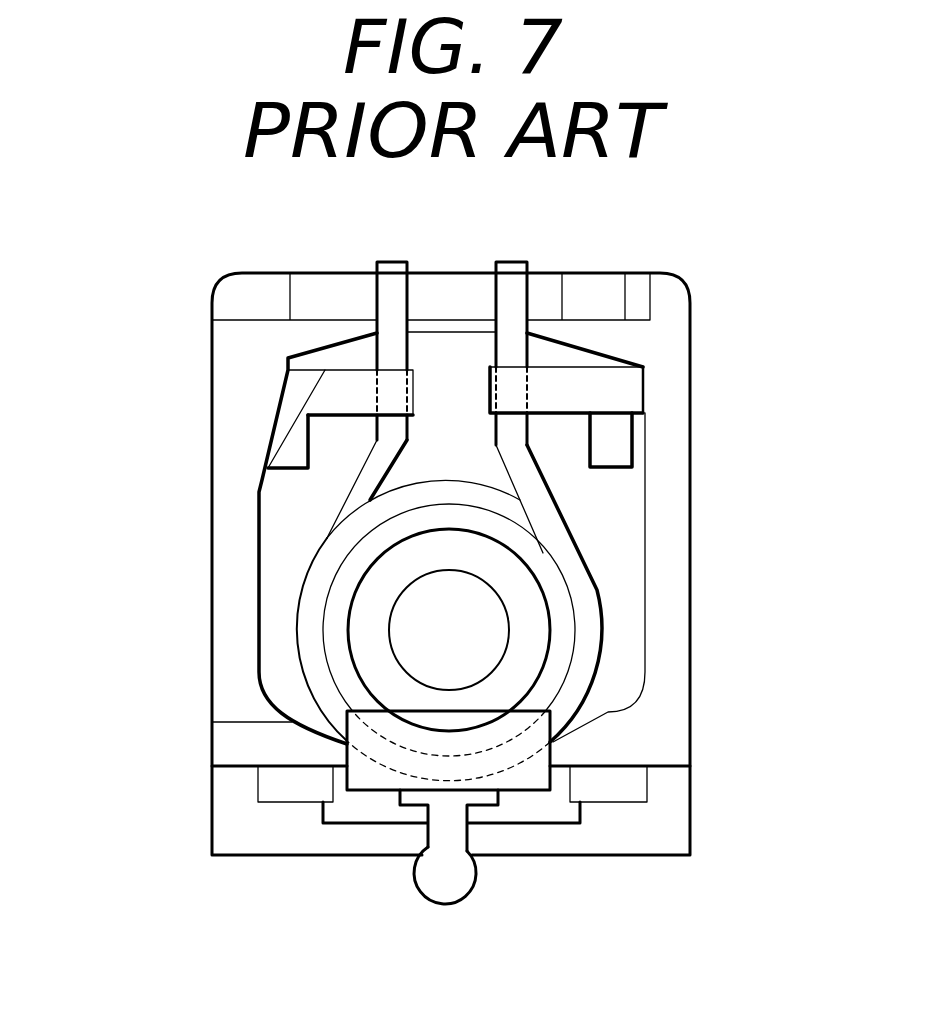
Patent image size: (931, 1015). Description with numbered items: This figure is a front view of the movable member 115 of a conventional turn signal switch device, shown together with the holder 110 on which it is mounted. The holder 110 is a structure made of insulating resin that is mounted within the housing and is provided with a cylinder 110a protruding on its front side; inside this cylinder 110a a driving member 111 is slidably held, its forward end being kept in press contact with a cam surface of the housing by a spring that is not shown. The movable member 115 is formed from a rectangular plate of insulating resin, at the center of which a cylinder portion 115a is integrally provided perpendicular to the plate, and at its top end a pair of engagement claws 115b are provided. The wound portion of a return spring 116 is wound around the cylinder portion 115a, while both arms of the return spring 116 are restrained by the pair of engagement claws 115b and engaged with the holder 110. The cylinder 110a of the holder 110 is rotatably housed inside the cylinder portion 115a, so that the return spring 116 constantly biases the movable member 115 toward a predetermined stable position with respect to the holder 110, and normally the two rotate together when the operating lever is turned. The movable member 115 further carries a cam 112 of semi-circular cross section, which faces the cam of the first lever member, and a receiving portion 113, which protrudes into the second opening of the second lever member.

The holder 110 is at (667, 343).
The cylinder 110a is at (527, 648).
The driving member 111 is at (410, 635).
The cam 112 is at (525, 778).
The receiving portion 113 is at (435, 870).
The movable member 115 is at (258, 522).
The cylinder portion 115a is at (555, 593).
The engagement claws 115b is at (377, 393).
The return spring 116 is at (555, 527).